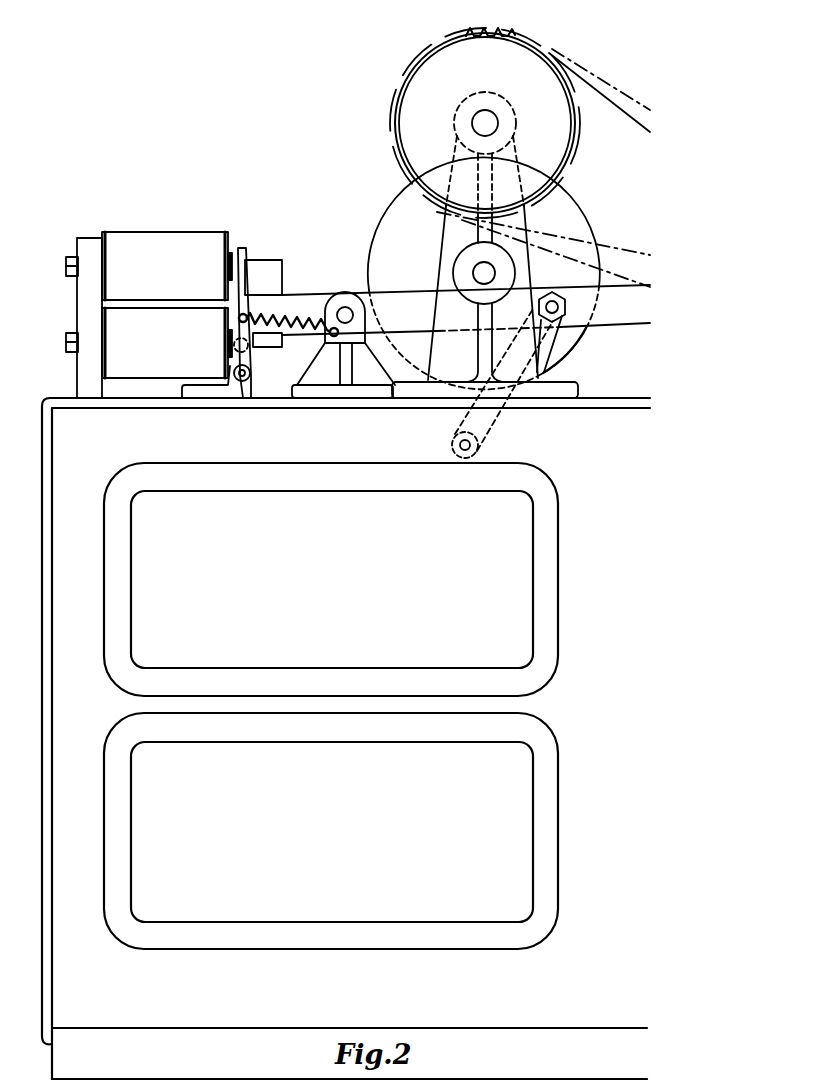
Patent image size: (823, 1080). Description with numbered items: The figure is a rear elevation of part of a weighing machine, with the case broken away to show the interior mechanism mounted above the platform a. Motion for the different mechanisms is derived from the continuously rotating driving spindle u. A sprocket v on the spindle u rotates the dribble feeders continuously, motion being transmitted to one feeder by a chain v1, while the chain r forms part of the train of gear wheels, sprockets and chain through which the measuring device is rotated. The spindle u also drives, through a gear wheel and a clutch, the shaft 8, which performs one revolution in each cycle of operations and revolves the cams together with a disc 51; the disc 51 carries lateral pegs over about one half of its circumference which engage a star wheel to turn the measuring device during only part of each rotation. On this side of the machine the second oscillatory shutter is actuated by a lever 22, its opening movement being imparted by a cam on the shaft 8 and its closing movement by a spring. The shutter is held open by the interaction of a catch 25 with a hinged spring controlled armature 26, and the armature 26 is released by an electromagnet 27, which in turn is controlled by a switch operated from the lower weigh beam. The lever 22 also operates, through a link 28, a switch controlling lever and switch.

The platform a is at (606, 404).
The electromagnet 27 is at (149, 315).
The hinged spring controlled armature 26 is at (246, 250).
The catch 25 is at (272, 282).
The disc 51 is at (372, 252).
The shaft 8 is at (484, 273).
The lever 22 is at (623, 318).
The link 28 is at (486, 431).
The sprocket v is at (487, 36).
The driving spindle u is at (482, 122).
The chain r is at (640, 122).
The chain v1 is at (543, 249).